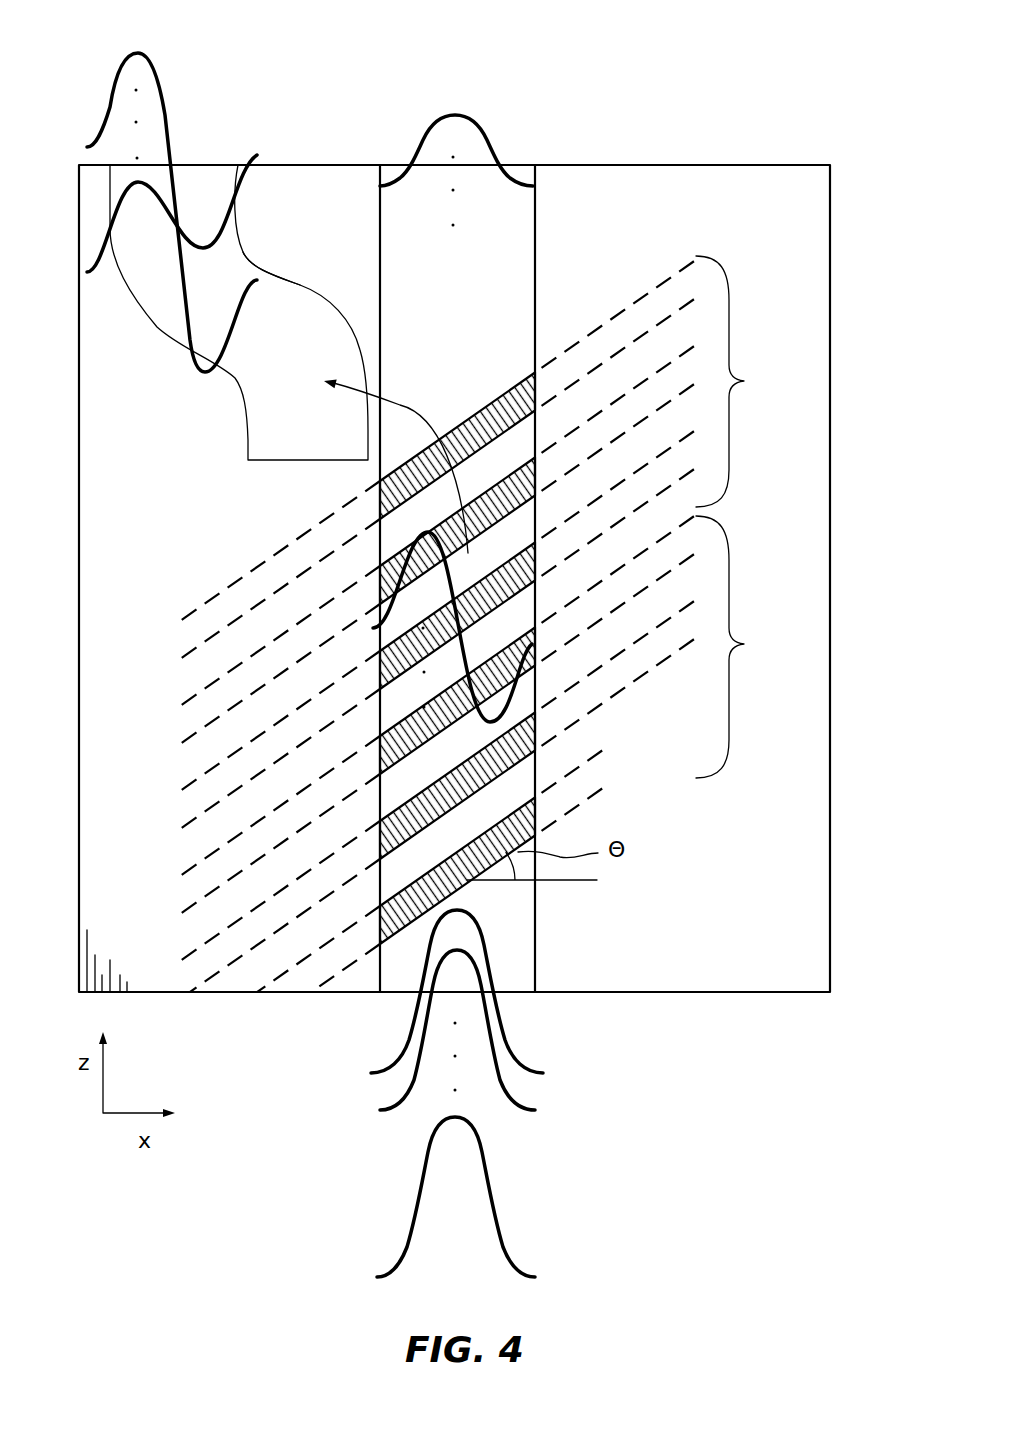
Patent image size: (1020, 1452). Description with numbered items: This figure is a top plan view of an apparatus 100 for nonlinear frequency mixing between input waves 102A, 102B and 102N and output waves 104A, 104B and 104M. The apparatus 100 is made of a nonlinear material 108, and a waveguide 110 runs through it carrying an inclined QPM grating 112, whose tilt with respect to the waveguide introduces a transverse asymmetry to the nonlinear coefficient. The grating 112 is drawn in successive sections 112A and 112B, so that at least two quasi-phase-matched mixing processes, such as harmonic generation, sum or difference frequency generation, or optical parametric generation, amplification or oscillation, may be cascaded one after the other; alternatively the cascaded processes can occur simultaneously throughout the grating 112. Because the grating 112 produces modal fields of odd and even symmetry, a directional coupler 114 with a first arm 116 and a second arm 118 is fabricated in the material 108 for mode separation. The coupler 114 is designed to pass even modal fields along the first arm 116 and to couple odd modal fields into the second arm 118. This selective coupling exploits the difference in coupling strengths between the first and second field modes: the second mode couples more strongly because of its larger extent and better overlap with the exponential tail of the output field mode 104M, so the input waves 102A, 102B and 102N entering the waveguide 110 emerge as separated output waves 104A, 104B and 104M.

The apparatus 100 is at (680, 107).
The input wave 102A is at (404, 1036).
The input wave 102B is at (405, 1083).
The input wave 102N is at (407, 1234).
The output wave 104A is at (164, 110).
The output wave 104B is at (421, 142).
The output wave 104M is at (184, 356).
The nonlinear material 108 is at (775, 913).
The waveguide 110 is at (536, 963).
The QPM grating 112 is at (732, 502).
The section of QPM grating 112A is at (753, 647).
The section of QPM grating 112B is at (753, 381).
The directional coupler 114 is at (328, 272).
The first arm 116 is at (536, 240).
The second arm 118 is at (245, 423).